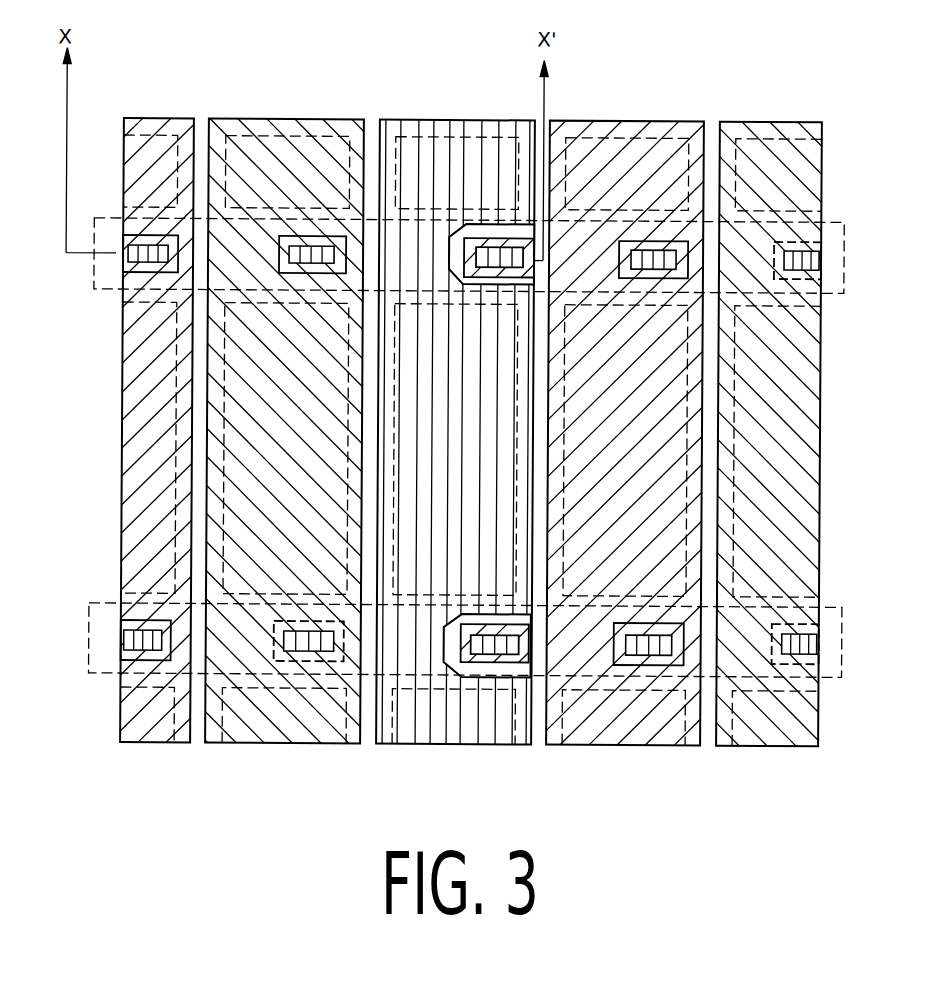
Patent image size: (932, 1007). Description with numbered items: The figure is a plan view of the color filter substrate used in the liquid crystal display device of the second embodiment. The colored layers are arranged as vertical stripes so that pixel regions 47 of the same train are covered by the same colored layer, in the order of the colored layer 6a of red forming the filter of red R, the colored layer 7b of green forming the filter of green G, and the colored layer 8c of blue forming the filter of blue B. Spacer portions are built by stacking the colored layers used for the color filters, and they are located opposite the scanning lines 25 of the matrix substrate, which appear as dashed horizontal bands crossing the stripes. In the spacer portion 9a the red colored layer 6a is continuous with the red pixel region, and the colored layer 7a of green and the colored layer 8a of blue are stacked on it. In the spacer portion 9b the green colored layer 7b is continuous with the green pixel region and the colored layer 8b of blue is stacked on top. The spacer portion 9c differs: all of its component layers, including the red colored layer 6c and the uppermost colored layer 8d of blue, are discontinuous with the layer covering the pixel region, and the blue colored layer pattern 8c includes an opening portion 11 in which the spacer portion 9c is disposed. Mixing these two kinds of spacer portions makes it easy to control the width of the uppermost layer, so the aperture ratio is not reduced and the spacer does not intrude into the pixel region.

The colored layer of red 6a is at (152, 124).
The colored layer of red 6c is at (501, 162).
The colored layer of green 7a is at (681, 178).
The colored layer of green 7b is at (257, 128).
The colored layer of blue 8a is at (652, 252).
The colored layer of blue 8b is at (303, 250).
The colored layer of blue 8c is at (446, 435).
The colored layer of blue 8d is at (517, 250).
The spacer portion 9a is at (675, 662).
The spacer portion 9b is at (312, 662).
The spacer portion 9c is at (502, 662).
The opening portion 11 is at (468, 432).
The scanning lines 25 is at (843, 256).
The pixel regions 47 is at (408, 583).
The filter of green G is at (288, 733).
The filter of red R is at (627, 733).
The filter of blue B is at (467, 723).